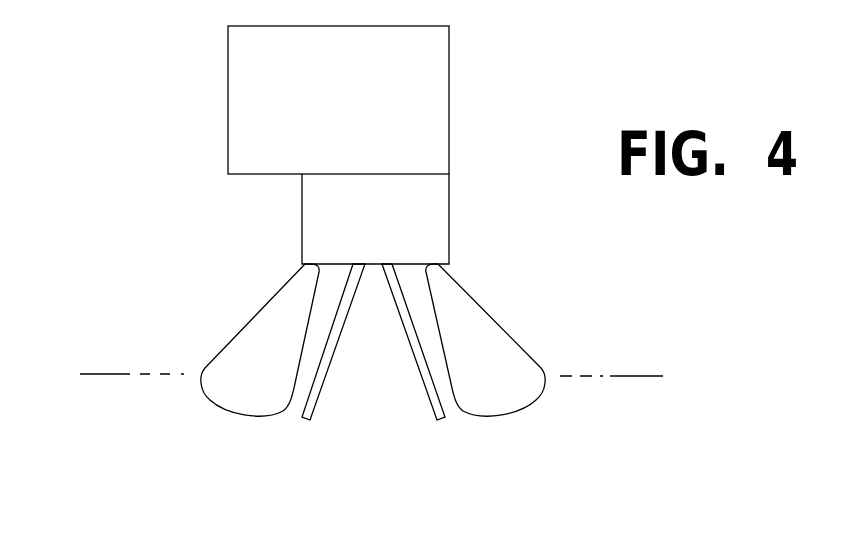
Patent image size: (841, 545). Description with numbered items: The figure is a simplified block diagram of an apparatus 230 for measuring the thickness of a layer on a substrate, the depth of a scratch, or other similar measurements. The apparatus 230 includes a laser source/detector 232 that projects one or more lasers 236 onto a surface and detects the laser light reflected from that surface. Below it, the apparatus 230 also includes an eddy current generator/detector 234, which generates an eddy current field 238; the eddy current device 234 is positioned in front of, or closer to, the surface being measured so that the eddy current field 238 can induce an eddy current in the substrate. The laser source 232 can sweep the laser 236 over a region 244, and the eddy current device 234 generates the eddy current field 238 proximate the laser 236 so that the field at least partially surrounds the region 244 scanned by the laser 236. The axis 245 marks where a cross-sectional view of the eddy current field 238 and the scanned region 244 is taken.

The apparatus 230 is at (180, 75).
The laser source/detector 232 is at (440, 108).
The eddy current generator/detector 234 is at (440, 202).
The laser 236 is at (322, 403).
The eddy current field 238 is at (282, 308).
The region 244 is at (445, 462).
The axis 245 is at (344, 371).